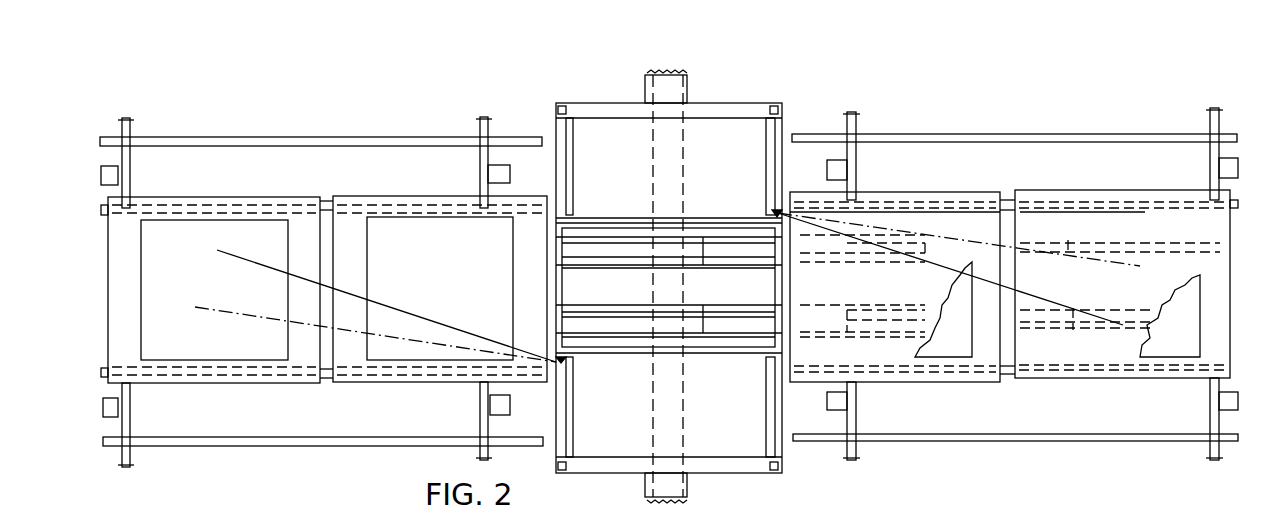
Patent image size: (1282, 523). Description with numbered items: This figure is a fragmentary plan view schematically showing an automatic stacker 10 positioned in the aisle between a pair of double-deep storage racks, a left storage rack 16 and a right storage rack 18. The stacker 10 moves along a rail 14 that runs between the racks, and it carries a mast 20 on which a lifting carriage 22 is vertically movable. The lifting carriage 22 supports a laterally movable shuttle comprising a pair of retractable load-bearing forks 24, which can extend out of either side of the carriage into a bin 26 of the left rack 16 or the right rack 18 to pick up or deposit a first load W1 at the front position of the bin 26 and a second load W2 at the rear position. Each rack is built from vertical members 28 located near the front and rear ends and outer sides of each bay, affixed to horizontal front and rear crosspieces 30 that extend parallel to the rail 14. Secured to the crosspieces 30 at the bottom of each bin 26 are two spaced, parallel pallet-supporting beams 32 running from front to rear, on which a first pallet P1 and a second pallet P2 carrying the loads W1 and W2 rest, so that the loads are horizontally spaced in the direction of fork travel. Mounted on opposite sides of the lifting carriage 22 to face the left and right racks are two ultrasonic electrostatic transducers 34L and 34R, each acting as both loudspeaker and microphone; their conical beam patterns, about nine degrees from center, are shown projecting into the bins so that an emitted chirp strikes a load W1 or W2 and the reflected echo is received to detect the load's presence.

The stacker 10 is at (626, 99).
The rail 14 is at (676, 150).
The left storage rack 16 is at (386, 137).
The right storage rack 18 is at (1078, 133).
The mast 20 is at (688, 93).
The lifting carriage 22 is at (723, 471).
The load-bearing forks 24 is at (1152, 254).
The bin 26 is at (329, 384).
The vertical members 28 is at (110, 170).
The crosspieces 30 is at (132, 430).
The pallet-supporting beams 32 is at (284, 208).
The left ultrasonic electrostatic transducer 34L is at (566, 360).
The right ultrasonic electrostatic transducer 34R is at (776, 213).
The first pallet P1 is at (349, 358).
The second pallet P2 is at (303, 222).
The first load W1 is at (671, 288).
The second load W2 is at (670, 290).